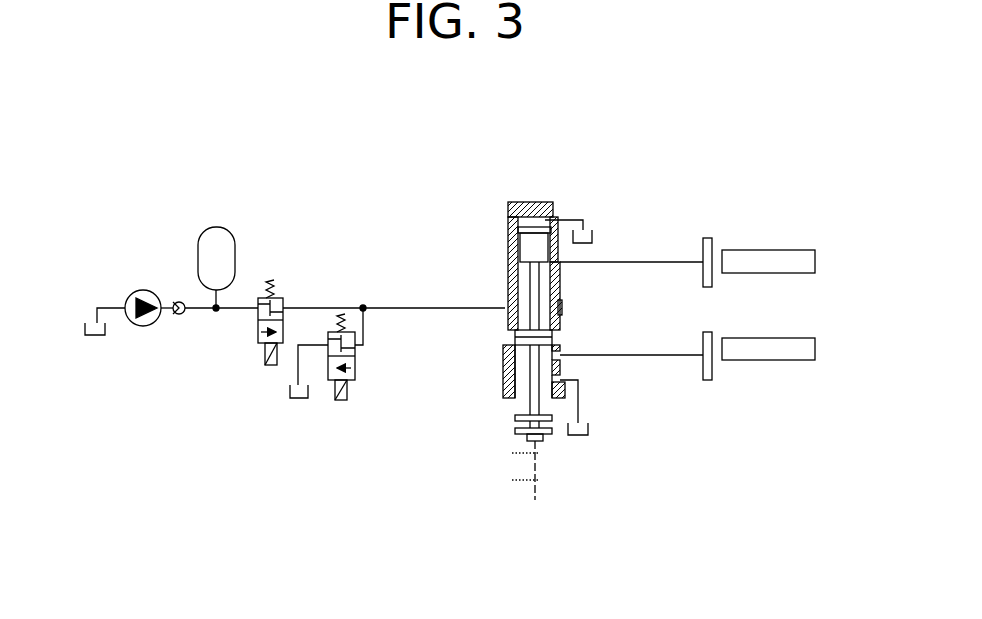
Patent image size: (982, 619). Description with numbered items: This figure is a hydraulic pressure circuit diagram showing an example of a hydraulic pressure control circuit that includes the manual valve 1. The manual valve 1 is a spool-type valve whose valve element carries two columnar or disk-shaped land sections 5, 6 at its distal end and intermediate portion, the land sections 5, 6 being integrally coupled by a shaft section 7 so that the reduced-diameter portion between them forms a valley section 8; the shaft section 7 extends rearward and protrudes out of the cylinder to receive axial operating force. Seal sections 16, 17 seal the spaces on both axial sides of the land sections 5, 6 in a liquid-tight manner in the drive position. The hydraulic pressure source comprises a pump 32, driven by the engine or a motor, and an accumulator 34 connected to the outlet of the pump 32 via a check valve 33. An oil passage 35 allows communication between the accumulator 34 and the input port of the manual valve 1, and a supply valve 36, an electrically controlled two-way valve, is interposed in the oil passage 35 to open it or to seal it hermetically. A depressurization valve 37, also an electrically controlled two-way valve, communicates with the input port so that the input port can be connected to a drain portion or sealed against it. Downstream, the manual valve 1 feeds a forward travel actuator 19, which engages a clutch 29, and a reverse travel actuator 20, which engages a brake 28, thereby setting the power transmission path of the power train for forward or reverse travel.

The manual valve 1 is at (532, 306).
The land section 5 is at (528, 250).
The land section 6 is at (515, 348).
The shaft section 7 is at (528, 405).
The valley section 8 is at (553, 280).
The seal section 16 is at (518, 232).
The seal section 17 is at (553, 331).
The forward travel actuator 19 is at (703, 243).
The reverse travel actuator 20 is at (703, 370).
The brake 28 is at (760, 360).
The clutch 29 is at (772, 250).
The pump 32 is at (143, 290).
The check valve 33 is at (178, 318).
The accumulator 34 is at (216, 230).
The oil passage 35 is at (382, 306).
The supply valve 36 is at (258, 338).
The depressurization valve 37 is at (355, 340).